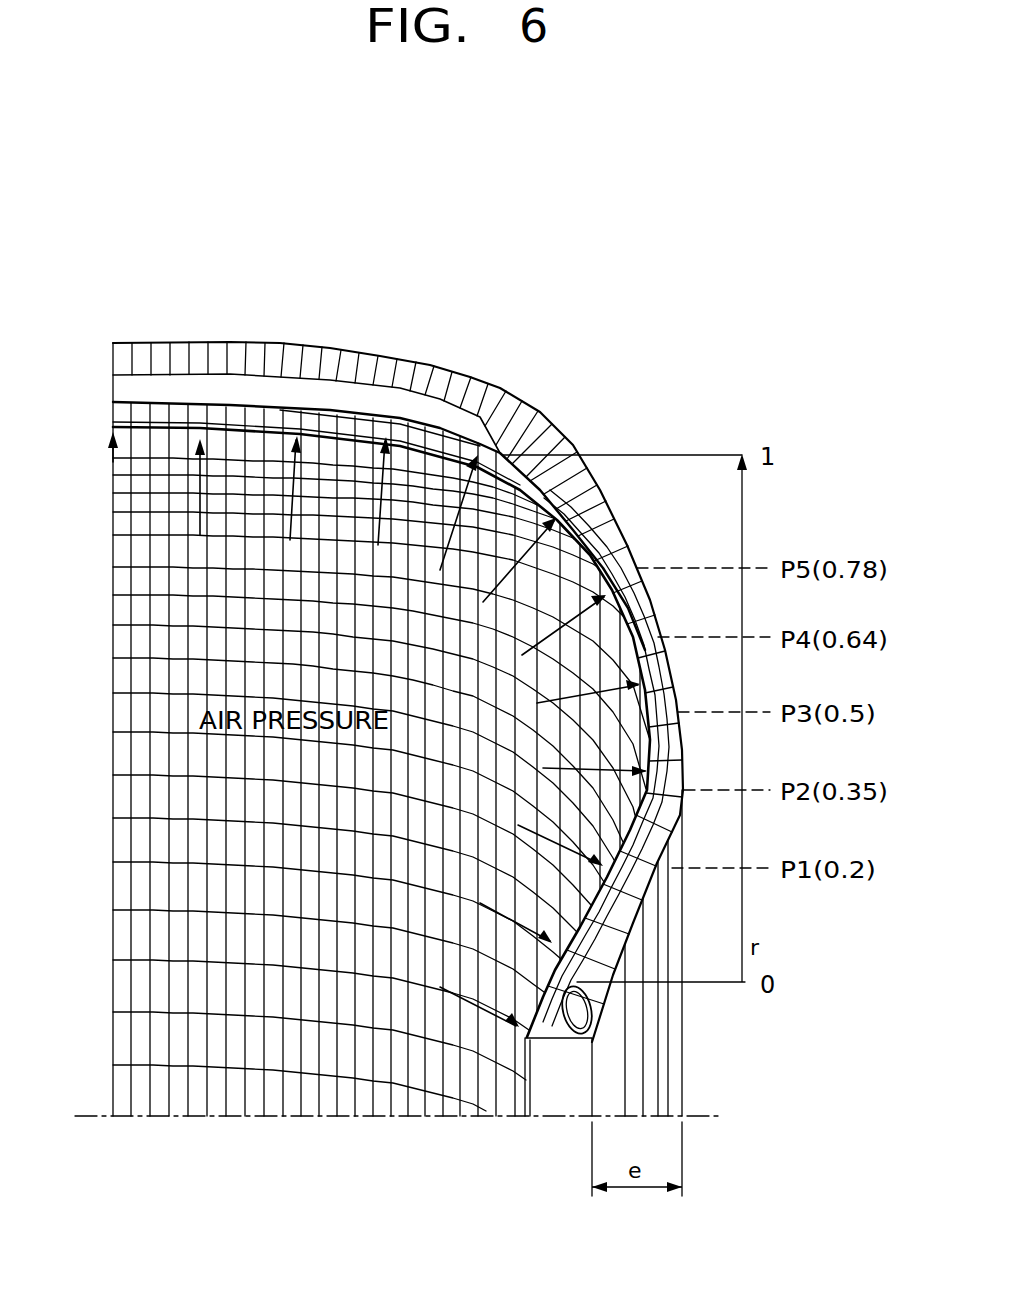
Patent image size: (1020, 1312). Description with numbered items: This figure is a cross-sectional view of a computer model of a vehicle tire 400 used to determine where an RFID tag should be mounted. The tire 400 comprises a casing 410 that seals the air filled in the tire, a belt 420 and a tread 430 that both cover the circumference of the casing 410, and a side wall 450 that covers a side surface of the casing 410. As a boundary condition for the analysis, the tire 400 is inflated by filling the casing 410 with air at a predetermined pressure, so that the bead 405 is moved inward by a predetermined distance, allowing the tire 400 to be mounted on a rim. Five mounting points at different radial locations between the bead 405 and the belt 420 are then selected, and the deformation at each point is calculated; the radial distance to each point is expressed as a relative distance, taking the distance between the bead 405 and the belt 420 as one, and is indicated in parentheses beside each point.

The tire 400 is at (120, 240).
The tread 430 is at (328, 356).
The belt 420 is at (415, 405).
The casing 410 is at (147, 423).
The side wall 450 is at (630, 923).
The bead 405 is at (575, 1013).